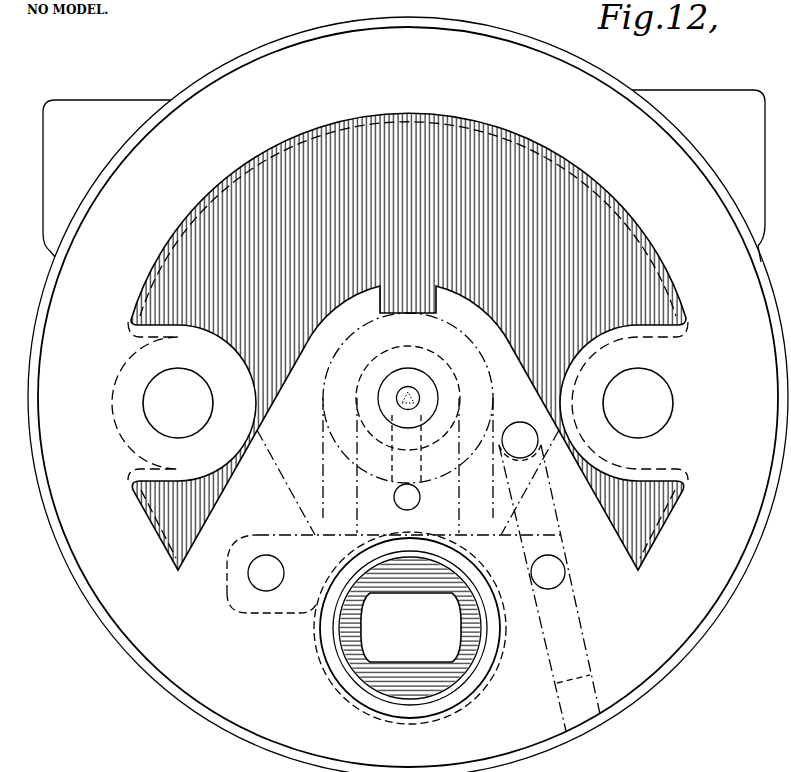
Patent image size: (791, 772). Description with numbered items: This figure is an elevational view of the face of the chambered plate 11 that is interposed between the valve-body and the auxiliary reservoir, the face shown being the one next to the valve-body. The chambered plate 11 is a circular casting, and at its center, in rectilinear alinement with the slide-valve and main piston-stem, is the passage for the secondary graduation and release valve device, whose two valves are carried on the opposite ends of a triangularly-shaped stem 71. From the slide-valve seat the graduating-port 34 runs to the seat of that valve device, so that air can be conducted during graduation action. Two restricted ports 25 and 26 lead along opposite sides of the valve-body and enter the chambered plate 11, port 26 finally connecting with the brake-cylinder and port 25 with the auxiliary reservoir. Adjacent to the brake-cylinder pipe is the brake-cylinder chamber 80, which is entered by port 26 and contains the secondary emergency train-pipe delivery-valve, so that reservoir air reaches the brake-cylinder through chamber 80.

The chambered plate 11 is at (408, 394).
The triangularly-shaped stem 71 is at (417, 397).
The graduating-port 34 is at (420, 497).
The port 26 is at (258, 578).
The port 25 is at (565, 571).
The brake-cylinder chamber 80 is at (487, 624).